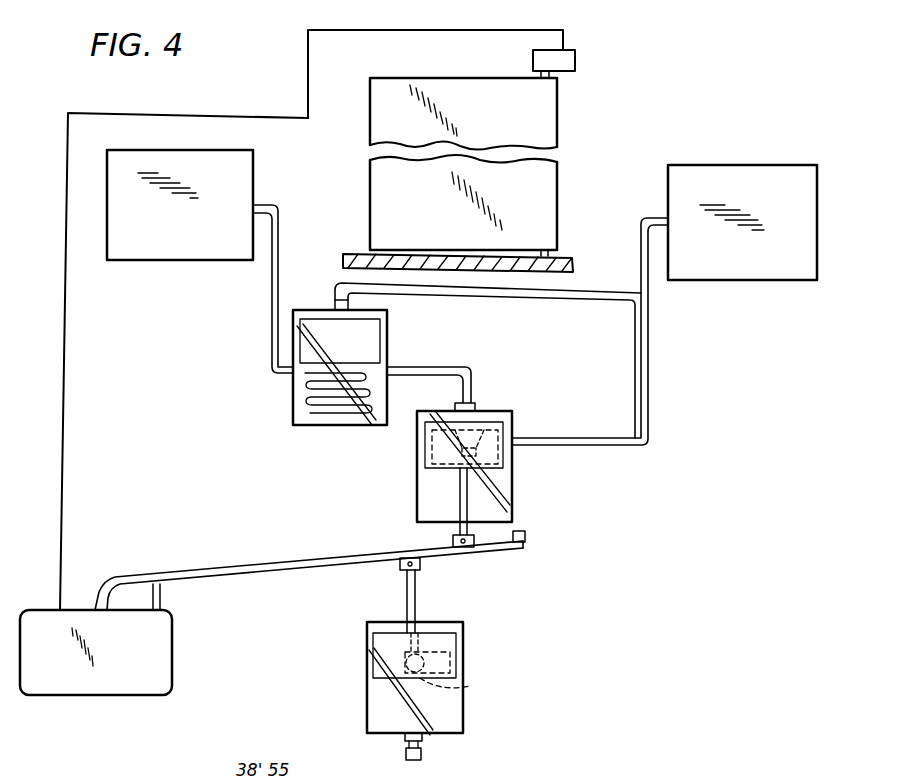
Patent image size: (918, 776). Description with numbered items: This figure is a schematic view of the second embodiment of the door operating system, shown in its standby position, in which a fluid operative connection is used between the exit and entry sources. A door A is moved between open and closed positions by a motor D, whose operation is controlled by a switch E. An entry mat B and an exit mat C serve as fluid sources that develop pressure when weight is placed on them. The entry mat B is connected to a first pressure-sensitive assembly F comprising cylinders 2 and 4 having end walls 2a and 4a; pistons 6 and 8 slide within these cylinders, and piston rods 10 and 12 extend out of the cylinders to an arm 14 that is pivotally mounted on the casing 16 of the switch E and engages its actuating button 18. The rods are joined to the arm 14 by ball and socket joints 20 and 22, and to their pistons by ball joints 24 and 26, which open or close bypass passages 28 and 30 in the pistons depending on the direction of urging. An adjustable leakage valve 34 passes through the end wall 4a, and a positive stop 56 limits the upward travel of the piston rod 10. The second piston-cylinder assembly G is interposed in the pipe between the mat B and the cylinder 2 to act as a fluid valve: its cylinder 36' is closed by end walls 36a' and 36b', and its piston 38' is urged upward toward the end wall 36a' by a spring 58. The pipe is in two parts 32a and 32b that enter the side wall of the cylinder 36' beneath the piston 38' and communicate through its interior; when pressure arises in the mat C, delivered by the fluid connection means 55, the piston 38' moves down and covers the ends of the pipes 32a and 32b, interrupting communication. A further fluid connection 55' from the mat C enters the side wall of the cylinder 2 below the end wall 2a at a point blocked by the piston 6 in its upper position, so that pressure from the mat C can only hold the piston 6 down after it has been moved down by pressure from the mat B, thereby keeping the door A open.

The door A is at (504, 125).
The entry mat B is at (179, 237).
The exit mat C is at (749, 263).
The motor D is at (576, 60).
The switch E is at (147, 661).
The first pressure-sensitive assembly F is at (553, 465).
The second piston-cylinder assembly G is at (402, 313).
The cylinder 2 is at (512, 467).
The end wall 2a is at (484, 410).
The cylinder 4 is at (367, 696).
The end wall 4a is at (448, 741).
The piston 6 is at (436, 462).
The piston 8 is at (385, 643).
The piston rod 10 is at (455, 534).
The piston rod 12 is at (418, 601).
The arm 14 is at (505, 553).
The casing 16 is at (131, 686).
The actuating button 18 is at (160, 598).
The ball and socket joint 20 is at (478, 549).
The ball and socket joint 22 is at (400, 566).
The ball joint 24 is at (506, 414).
The ball joint 26 is at (451, 655).
The bypass passage 28 is at (458, 415).
The bypass passage 30 is at (460, 684).
The pipe part 32a is at (283, 222).
The pipe part 32b is at (462, 378).
The adjustable leakage valve 34 is at (425, 748).
The cylinder 36' is at (263, 400).
The end wall 36a' is at (395, 311).
The end wall 36b' is at (358, 443).
The piston 38' is at (337, 349).
The fluid connection means 55 is at (488, 346).
The fluid connection 55' is at (608, 331).
The positive stop 56 is at (519, 530).
The spring 58 is at (329, 413).